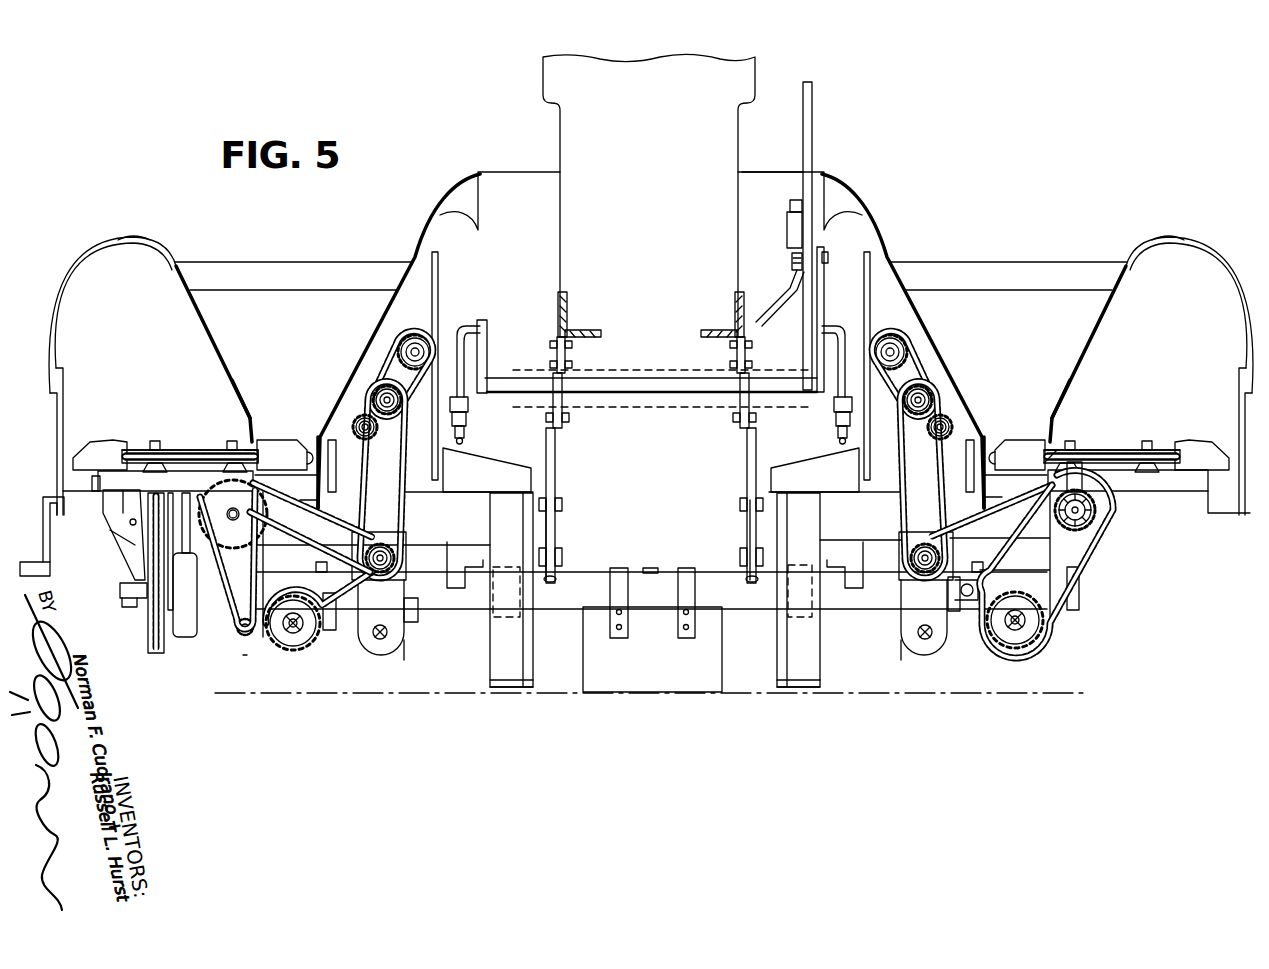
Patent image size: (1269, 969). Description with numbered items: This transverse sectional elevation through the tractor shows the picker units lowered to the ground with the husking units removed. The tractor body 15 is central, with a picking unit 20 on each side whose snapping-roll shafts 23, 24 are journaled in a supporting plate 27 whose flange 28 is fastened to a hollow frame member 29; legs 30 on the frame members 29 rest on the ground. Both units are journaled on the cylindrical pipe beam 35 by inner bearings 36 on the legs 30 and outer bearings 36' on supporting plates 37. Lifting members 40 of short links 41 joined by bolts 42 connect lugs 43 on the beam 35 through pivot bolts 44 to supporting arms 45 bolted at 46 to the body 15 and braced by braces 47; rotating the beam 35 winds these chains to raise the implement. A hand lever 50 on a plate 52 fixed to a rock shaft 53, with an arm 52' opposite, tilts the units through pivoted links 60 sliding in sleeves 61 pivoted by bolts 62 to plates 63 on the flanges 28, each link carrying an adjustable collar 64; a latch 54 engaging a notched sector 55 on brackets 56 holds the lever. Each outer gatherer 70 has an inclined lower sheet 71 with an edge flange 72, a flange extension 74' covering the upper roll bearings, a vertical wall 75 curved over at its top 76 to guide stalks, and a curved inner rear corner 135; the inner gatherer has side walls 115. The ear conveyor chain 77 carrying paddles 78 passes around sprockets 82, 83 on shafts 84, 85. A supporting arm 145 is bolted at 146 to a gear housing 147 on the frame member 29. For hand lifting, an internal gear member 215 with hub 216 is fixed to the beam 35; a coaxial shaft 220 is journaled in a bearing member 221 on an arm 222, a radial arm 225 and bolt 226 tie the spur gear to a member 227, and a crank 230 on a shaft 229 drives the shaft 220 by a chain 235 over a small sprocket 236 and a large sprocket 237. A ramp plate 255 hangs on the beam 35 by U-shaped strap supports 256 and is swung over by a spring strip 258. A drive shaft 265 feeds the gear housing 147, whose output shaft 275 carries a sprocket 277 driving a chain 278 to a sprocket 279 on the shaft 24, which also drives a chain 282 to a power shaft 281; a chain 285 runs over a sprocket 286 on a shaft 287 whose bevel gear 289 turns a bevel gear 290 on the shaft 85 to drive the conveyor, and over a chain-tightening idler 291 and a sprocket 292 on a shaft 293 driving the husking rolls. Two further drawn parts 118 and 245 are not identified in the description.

The tractor body 15 is at (560, 122).
The picking unit 20 is at (72, 253).
The shaft 23 is at (325, 440).
The shaft 24 is at (372, 392).
The supporting plate 27 is at (318, 445).
The flange 28 is at (405, 495).
The frame member 29 is at (485, 535).
The leg 30 is at (500, 668).
The supporting beam 35 is at (638, 400).
The inner journal bearing 36 is at (571, 608).
The outer journal bearing 36' is at (675, 553).
The supporting plate 37 is at (329, 630).
The flexible lifting member 40 is at (575, 510).
The link 41 is at (556, 446).
The bolt 42 is at (562, 500).
The lug 43 is at (562, 552).
The pivot bolt 44 is at (570, 418).
The supporting arm 45 is at (553, 400).
The bolt 46 is at (550, 364).
The brace 47 is at (558, 302).
The hand lever 50 is at (812, 122).
The plate 52 is at (801, 319).
The arm 52' is at (502, 354).
The rock shaft 53 is at (638, 380).
The latch 54 is at (787, 226).
The notched sector 55 is at (792, 262).
The bracket 56 is at (785, 298).
The link 60 is at (458, 330).
The sleeve 61 is at (466, 420).
The bolt 62 is at (468, 404).
The plate 63 is at (460, 452).
The adjustable collar 64 is at (464, 436).
The outer gatherer 70 is at (245, 380).
The lower sheet 71 is at (192, 451).
The outer edge flange 72 is at (96, 481).
The flange extension 74' is at (680, 440).
The wall 75 is at (228, 365).
The curved top 76 is at (133, 237).
The endless chain 77 is at (165, 450).
The paddle 78 is at (100, 455).
The sprocket 82 is at (148, 452).
The sprocket 83 is at (230, 442).
The shaft 84 is at (155, 440).
The shaft 85 is at (248, 450).
The side wall 115 is at (345, 352).
The panel 118 is at (288, 269).
The curved inner rear corner 135 is at (312, 505).
The supporting arm 145 is at (370, 650).
The bolt 146 is at (414, 610).
The gear housing 147 is at (408, 652).
The internal gear member 215 is at (195, 637).
The hub 216 is at (238, 632).
The shaft 220 is at (122, 600).
The bearing member 221 is at (170, 610).
The arm 222 is at (120, 586).
The arm 225 is at (125, 540).
The bolt 226 is at (233, 520).
The member 227 is at (233, 514).
The shaft 229 is at (148, 493).
The crank 230 is at (48, 497).
The drive chain 235 is at (120, 530).
The sprocket 236 is at (128, 513).
The sprocket 237 is at (148, 640).
The rod 245 is at (438, 258).
The ramp plate 255 is at (652, 649).
The strap support 256 is at (682, 590).
The spring metal 258 is at (652, 568).
The drive shaft 265 is at (386, 640).
The output shaft 275 is at (394, 560).
The sprocket 277 is at (406, 536).
The chain 278 is at (358, 438).
The sprocket 279 is at (366, 420).
The power shaft 281 is at (398, 340).
The chain 282 is at (382, 360).
The chain 285 is at (305, 495).
The sprocket 286 is at (285, 545).
The shaft 287 is at (265, 518).
The bevel gear 289 is at (1110, 545).
The bevel gear 290 is at (1090, 488).
The chain-tightening idler 291 is at (240, 648).
The sprocket 292 is at (290, 650).
The shaft 293 is at (298, 634).